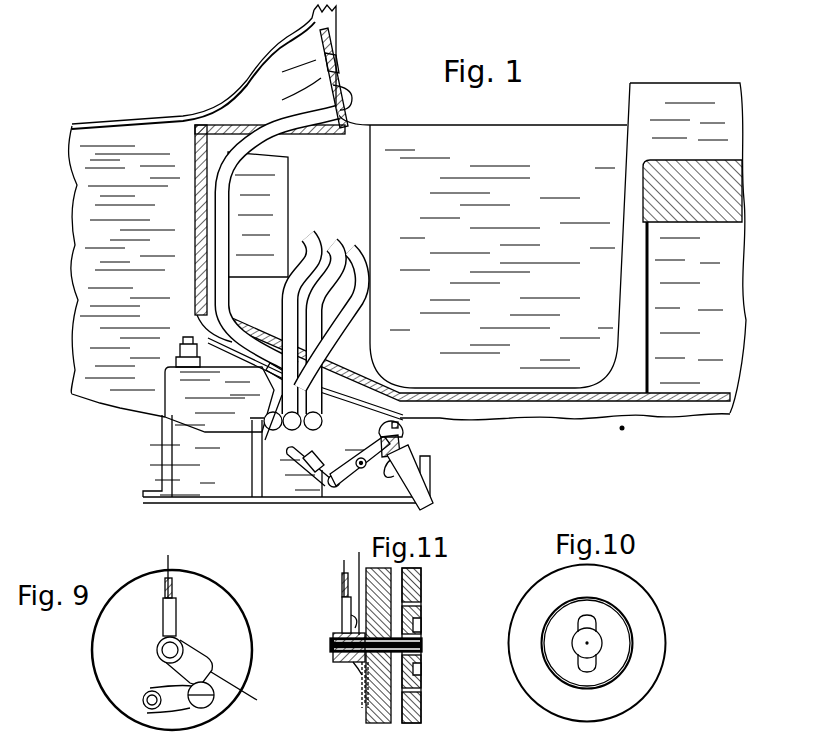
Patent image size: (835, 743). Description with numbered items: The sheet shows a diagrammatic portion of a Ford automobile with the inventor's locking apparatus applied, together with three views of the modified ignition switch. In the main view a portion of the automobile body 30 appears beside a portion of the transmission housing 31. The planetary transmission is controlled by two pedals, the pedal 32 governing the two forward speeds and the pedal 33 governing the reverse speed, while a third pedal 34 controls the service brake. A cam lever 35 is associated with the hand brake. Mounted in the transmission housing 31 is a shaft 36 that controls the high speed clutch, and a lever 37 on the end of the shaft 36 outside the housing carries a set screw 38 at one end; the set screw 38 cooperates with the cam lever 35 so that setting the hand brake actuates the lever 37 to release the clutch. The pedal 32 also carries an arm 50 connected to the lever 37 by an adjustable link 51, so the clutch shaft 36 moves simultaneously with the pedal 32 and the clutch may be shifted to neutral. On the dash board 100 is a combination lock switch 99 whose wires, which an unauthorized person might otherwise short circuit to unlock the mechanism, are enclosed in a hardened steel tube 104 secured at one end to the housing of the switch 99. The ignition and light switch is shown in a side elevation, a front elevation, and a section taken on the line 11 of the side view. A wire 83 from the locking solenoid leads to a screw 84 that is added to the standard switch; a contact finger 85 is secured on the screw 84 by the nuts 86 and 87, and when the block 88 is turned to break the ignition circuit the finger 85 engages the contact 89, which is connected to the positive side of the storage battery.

In FIG. 1, the dash board 100 is at (331, 38).
In FIG. 1, the combination lock switch 99 is at (349, 98).
In FIG. 1, the hardened steel tube 104 is at (235, 240).
In FIG. 1, the third pedal 34 is at (337, 246).
In FIG. 1, the pedal 33 is at (366, 285).
In FIG. 1, the pedal 32 is at (284, 296).
In FIG. 1, the transmission housing 31 is at (178, 451).
In FIG. 1, the adjustable link 51 is at (299, 441).
In FIG. 1, the arm 50 is at (342, 440).
In FIG. 1, the shaft 36 is at (360, 458).
In FIG. 1, the set screw 38 is at (403, 424).
In FIG. 1, the cam lever 35 is at (410, 475).
In FIG. 1, the lever 37 is at (349, 478).
In FIG. 1, the automobile body 30 is at (555, 401).
In FIG. 9, the section line 11— 11 is at (219, 624).
In FIG. 9, the wire 83 is at (163, 596).
In FIG. 11, the wire 83 is at (341, 590).
In FIG. 9, the contact finger 85 is at (188, 658).
In FIG. 11, the contact finger 85 is at (360, 667).
In FIG. 9, the contact 89 is at (192, 686).
In FIG. 11, the nut 87 is at (359, 553).
In FIG. 11, the nut 86 is at (341, 611).
In FIG. 11, the screw 84 is at (330, 645).
In FIG. 11, the block 88 is at (421, 611).
In FIG. 10, the block 88 is at (613, 629).